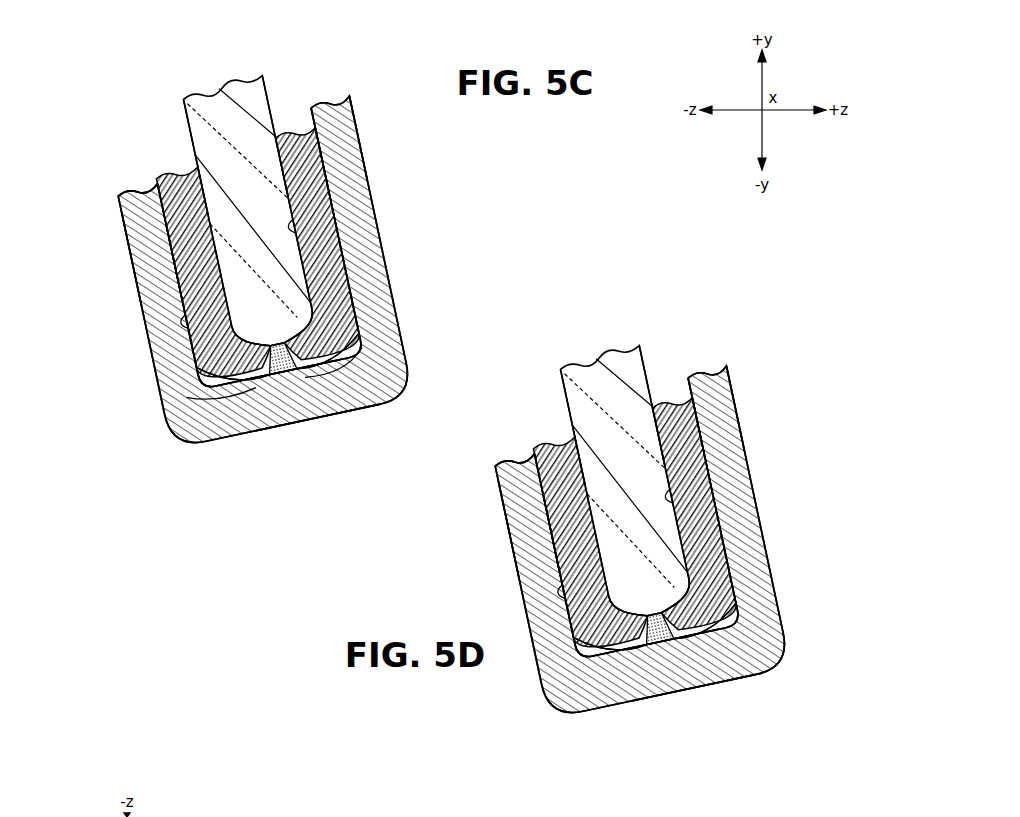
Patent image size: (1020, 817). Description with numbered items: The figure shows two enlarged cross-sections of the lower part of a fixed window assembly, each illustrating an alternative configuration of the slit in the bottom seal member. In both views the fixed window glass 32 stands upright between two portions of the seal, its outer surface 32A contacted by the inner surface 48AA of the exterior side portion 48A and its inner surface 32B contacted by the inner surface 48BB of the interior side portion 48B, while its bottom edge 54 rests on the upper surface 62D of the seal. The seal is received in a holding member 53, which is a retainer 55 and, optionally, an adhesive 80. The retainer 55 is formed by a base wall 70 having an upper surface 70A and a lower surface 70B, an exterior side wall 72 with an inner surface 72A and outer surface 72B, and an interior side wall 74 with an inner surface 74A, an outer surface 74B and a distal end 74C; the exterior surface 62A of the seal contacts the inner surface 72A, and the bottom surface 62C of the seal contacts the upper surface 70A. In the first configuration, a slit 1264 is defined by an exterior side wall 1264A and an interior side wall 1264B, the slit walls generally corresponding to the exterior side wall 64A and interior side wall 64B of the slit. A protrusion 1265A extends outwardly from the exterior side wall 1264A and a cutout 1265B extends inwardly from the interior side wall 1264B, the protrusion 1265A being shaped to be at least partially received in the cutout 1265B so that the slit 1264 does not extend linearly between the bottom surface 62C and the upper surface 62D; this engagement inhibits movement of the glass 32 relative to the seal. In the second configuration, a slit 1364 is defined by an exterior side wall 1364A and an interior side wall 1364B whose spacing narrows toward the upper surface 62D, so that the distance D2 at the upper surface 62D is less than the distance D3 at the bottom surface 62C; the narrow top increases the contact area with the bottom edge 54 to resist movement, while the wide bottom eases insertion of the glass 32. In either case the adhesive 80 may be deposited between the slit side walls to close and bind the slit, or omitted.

In FIG. 5C, the fixed window glass 32 is at (218, 88).
In FIG. 5D, the fixed window glass 32 is at (593, 358).
In FIG. 5C, the outer surface of the fixed window glass 32A is at (262, 78).
In FIG. 5D, the outer surface of the fixed window glass 32A is at (640, 348).
In FIG. 5C, the inner surface of the fixed window glass 32B is at (183, 102).
In FIG. 5D, the inner surface of the fixed window glass 32B is at (560, 372).
In FIG. 5C, the exterior side portion 48A is at (292, 132).
In FIG. 5D, the exterior side portion 48A is at (669, 403).
In FIG. 5C, the interior side portion 48B is at (178, 172).
In FIG. 5D, the interior side portion 48B is at (555, 443).
In FIG. 5C, the inner surface of the exterior side portion 48AA is at (296, 224).
In FIG. 5D, the inner surface of the exterior side portion 48AA is at (674, 495).
In FIG. 5C, the inner surface of the interior side portion 48BB is at (185, 322).
In FIG. 5D, the inner surface of the interior side portion 48BB is at (563, 592).
In FIG. 5C, the holding member 53 is at (418, 268).
In FIG. 5D, the holding member 53 is at (795, 600).
In FIG. 5C, the bottom edge of the fixed window glass 54 is at (242, 352).
In FIG. 5D, the bottom edge of the fixed window glass 54 is at (585, 652).
In FIG. 5C, the retainer 55 is at (394, 259).
In FIG. 5D, the retainer 55 is at (781, 593).
In FIG. 5C, the exterior surface of the bottom seal member 62A is at (327, 180).
In FIG. 5D, the exterior surface of the bottom seal member 62A is at (705, 449).
In FIG. 5C, the bottom surface of the bottom seal member 62C is at (212, 400).
In FIG. 5D, the bottom surface of the bottom seal member 62C is at (640, 700).
In FIG. 5C, the upper surface of the bottom seal member 62D is at (352, 305).
In FIG. 5D, the upper surface of the bottom seal member 62D is at (733, 585).
In FIG. 5C, the exterior side wall of the slit 64A is at (172, 240).
In FIG. 5D, the interior side wall of the slit 64B is at (548, 560).
In FIG. 5C, the base wall 70 is at (350, 398).
In FIG. 5D, the base wall 70 is at (745, 665).
In FIG. 5C, the upper surface of the base wall 70A is at (355, 415).
In FIG. 5D, the upper surface of the base wall 70A is at (758, 660).
In FIG. 5C, the lower surface of the base wall 70B is at (372, 418).
In FIG. 5D, the lower surface of the base wall 70B is at (772, 668).
In FIG. 5C, the exterior side wall 72 is at (337, 101).
In FIG. 5D, the exterior side wall 72 is at (716, 372).
In FIG. 5C, the inner surface of the exterior side wall 72A is at (313, 110).
In FIG. 5D, the inner surface of the exterior side wall 72A is at (690, 382).
In FIG. 5C, the outer surface of the exterior side wall 72B is at (356, 126).
In FIG. 5D, the outer surface of the exterior side wall 72B is at (733, 398).
In FIG. 5C, the interior side wall 74 is at (160, 299).
In FIG. 5D, the interior side wall 74 is at (522, 528).
In FIG. 5C, the inner surface of the interior side wall 74A is at (168, 216).
In FIG. 5D, the inner surface of the interior side wall 74A is at (535, 492).
In FIG. 5C, the outer surface of the interior side wall 74B is at (120, 200).
In FIG. 5D, the outer surface of the interior side wall 74B is at (505, 490).
In FIG. 5C, the distal end of the interior side wall 74C is at (137, 190).
In FIG. 5D, the distal end of the interior side wall 74C is at (514, 460).
In FIG. 5C, the adhesive 80 is at (281, 366).
In FIG. 5D, the adhesive 80 is at (668, 645).
In FIG. 5C, the slit 1264 is at (263, 375).
In FIG. 5C, the exterior side wall of the slit 1264A is at (341, 354).
In FIG. 5C, the interior side wall of the slit 1264B is at (223, 377).
In FIG. 5C, the protrusion 1265A is at (345, 380).
In FIG. 5C, the cutout 1265B is at (197, 400).
In FIG. 5D, the slit 1364 is at (712, 682).
In FIG. 5D, the exterior side wall of the slit 1364A is at (720, 645).
In FIG. 5D, the interior side wall of the slit 1364B is at (610, 700).
In FIG. 5D, the distance D2 is at (652, 578).
In FIG. 5D, the distance D3 is at (657, 697).